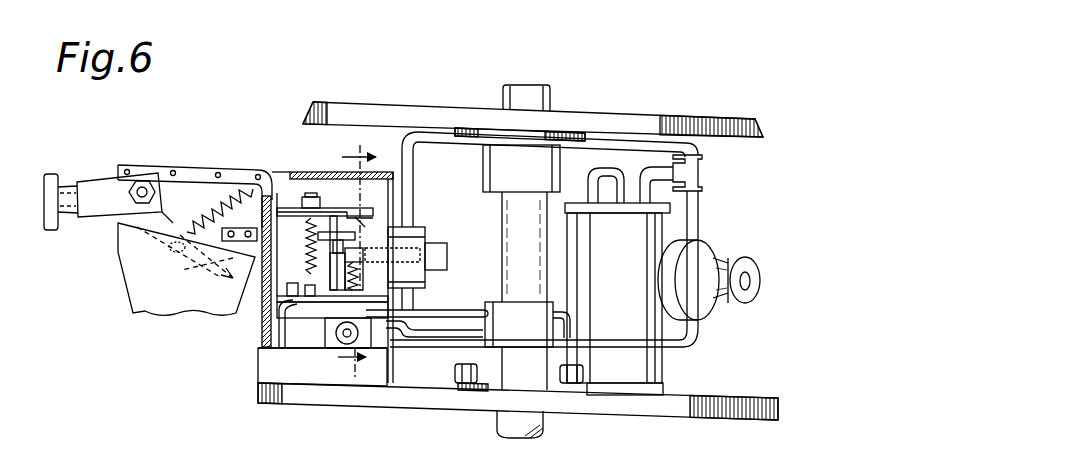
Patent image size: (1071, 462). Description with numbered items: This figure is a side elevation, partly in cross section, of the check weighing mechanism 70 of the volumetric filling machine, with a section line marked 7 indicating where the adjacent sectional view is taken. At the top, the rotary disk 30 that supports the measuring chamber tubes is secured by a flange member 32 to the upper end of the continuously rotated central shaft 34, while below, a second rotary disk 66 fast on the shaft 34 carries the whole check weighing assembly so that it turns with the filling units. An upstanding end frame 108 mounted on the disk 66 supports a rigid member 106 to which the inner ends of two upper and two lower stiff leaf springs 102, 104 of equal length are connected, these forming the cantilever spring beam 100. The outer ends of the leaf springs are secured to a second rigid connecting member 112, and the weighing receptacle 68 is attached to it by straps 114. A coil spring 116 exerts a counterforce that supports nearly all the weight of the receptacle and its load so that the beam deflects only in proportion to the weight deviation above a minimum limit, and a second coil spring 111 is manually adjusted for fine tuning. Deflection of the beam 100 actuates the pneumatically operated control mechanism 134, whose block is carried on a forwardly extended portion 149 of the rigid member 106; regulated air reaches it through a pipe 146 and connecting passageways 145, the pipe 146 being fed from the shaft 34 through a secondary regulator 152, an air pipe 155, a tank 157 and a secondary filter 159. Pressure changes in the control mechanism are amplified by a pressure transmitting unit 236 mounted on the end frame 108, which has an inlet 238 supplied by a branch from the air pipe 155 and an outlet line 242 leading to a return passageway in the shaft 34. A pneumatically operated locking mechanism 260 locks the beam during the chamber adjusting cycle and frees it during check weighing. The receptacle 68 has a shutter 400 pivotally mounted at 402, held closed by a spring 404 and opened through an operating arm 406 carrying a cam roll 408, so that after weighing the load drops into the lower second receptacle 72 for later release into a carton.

The section line 7- 7 is at (357, 258).
The rotary disk 30 is at (603, 113).
The flange member 32 is at (558, 158).
The central shaft 34 is at (550, 93).
The rotary disk 66 is at (597, 409).
The weighing receptacle 68 is at (183, 185).
The check weighing mechanism 70 is at (94, 167).
The second receptacle 72 is at (133, 293).
The cantilever spring beam 100 is at (298, 185).
The upper cantilever springs 102 is at (290, 180).
The lower cantilever springs 104 is at (264, 341).
The rigid member 106 is at (372, 222).
The end frame 108 is at (388, 189).
The second coil spring 111 is at (365, 310).
The second rigid connecting member 112 is at (258, 275).
The straps 114 is at (213, 167).
The coil spring 116 is at (263, 297).
The pneumatically operated control mechanism 134 is at (367, 246).
The connecting passageways 145 is at (398, 350).
The pipe 146 is at (492, 349).
The forwardly extended portion 149 is at (425, 233).
The secondary regulator 152 is at (702, 309).
The air pipe 155 is at (699, 209).
The tank 157 is at (658, 369).
The secondary filter 159 is at (575, 256).
The pressure transmitting unit 236 is at (413, 258).
The inlet 238 is at (464, 325).
The outlet line 242 is at (440, 137).
The weighing beam locking mechanism 260 is at (266, 357).
The shutter 400 is at (195, 262).
The pivot 402 is at (130, 193).
The spring 404 is at (217, 207).
The operating arm 406 is at (92, 186).
The cam roll 408 is at (46, 177).